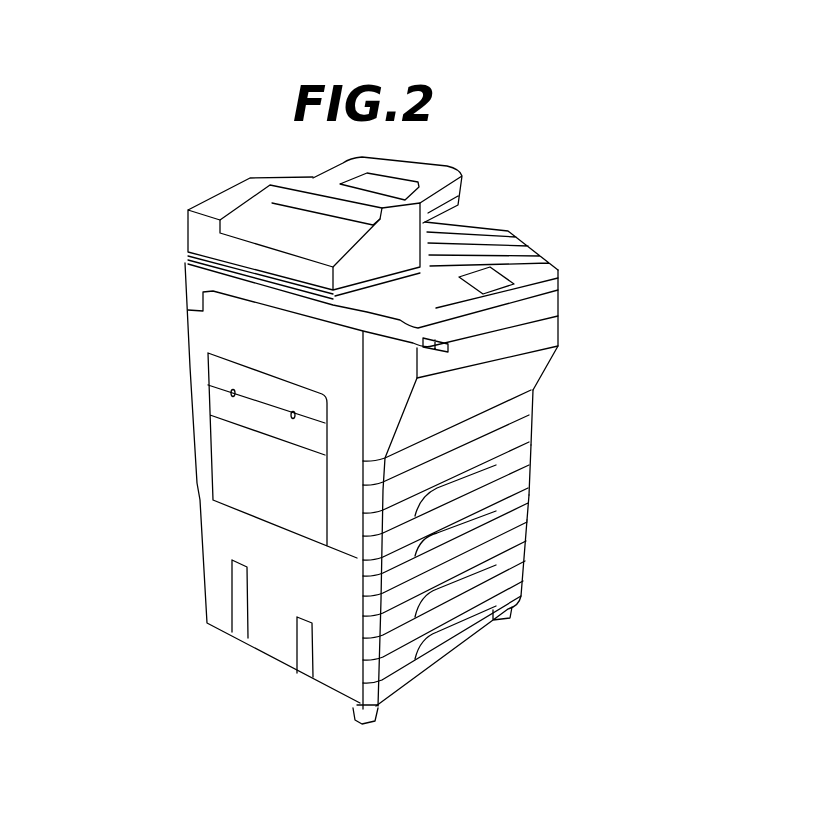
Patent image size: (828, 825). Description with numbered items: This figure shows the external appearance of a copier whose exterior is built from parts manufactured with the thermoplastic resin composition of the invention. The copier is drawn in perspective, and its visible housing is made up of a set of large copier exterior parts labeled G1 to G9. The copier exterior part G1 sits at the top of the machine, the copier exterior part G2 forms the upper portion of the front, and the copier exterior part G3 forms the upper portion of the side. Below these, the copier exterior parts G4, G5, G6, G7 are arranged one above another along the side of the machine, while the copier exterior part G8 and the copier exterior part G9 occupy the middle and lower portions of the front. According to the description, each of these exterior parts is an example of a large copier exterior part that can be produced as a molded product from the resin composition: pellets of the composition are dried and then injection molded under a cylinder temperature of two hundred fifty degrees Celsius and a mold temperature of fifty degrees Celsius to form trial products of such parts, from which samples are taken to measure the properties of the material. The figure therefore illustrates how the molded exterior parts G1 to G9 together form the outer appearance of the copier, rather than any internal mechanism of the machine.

The copier exterior part G1 is at (190, 235).
The copier exterior part G2 is at (198, 400).
The copier exterior part G3 is at (543, 360).
The copier exterior part G4 is at (522, 427).
The copier exterior part G5 is at (528, 463).
The copier exterior part G6 is at (515, 520).
The copier exterior part G7 is at (517, 573).
The copier exterior part G8 is at (227, 462).
The copier exterior part G9 is at (277, 643).